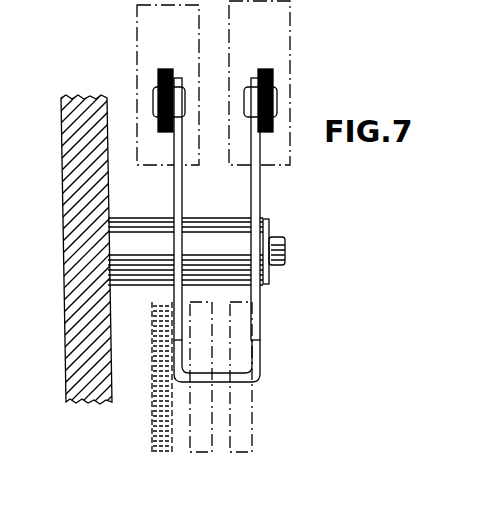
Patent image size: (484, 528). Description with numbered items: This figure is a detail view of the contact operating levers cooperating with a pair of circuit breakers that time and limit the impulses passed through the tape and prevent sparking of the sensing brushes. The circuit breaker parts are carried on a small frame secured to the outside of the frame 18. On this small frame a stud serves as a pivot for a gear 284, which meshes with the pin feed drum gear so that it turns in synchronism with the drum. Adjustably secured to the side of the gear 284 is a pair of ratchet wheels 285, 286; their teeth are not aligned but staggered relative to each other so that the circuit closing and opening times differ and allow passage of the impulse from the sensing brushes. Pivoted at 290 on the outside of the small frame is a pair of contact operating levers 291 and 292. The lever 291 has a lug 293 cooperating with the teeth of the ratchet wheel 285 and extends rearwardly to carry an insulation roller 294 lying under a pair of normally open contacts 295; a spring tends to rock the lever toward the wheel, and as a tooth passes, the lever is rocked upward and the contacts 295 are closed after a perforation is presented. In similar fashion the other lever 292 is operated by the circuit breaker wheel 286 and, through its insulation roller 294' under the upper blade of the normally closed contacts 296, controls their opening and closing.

The frame 18 is at (67, 165).
The gear 284 is at (155, 392).
The ratchet wheel 285 is at (207, 407).
The ratchet wheel 286 is at (243, 427).
The pivot 290 is at (285, 246).
The contact operating lever 291 is at (174, 199).
The contact operating lever 292 is at (260, 191).
The lug 293 is at (200, 376).
The insulation roller 294 is at (139, 91).
The insulation roller 294' is at (293, 93).
The contacts 295 is at (137, 93).
The contacts 296 is at (292, 92).